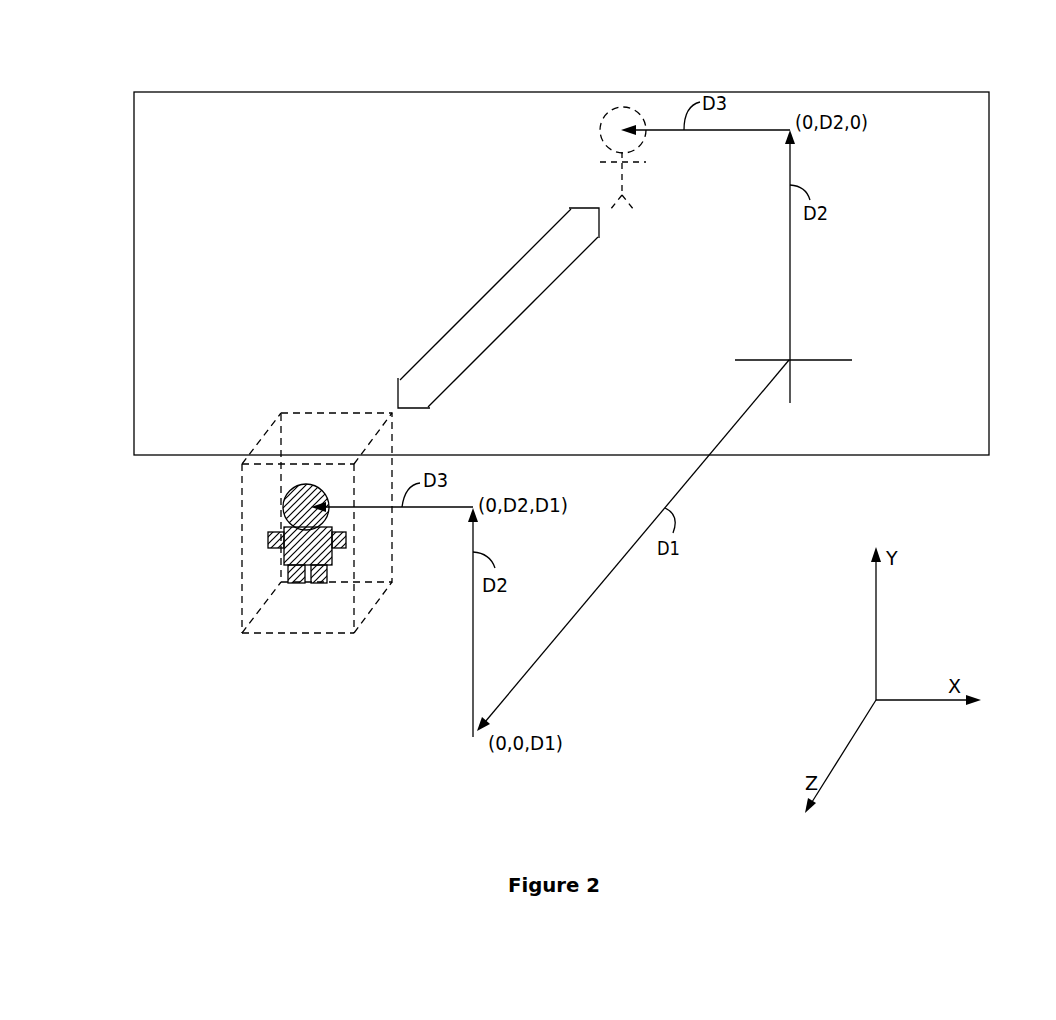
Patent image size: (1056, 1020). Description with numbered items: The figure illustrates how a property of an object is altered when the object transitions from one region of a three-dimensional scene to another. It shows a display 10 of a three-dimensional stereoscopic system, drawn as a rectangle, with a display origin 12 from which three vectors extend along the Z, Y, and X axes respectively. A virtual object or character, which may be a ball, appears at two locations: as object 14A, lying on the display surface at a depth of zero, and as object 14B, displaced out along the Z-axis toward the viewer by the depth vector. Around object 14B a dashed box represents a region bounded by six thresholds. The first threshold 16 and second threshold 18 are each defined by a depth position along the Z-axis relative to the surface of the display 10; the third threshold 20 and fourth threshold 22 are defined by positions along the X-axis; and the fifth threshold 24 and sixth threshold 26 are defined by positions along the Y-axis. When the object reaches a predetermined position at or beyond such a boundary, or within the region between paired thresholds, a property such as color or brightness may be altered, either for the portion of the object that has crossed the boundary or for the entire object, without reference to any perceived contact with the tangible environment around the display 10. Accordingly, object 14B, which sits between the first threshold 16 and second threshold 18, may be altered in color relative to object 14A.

The display 10 is at (874, 92).
The display origin 12 is at (790, 358).
The object 14A is at (561, 155).
The object 14B is at (300, 505).
The first threshold 16 is at (335, 413).
The second threshold 18 is at (267, 462).
The third threshold 20 is at (350, 602).
The fourth threshold 22 is at (242, 598).
The fifth threshold 24 is at (378, 600).
The sixth threshold 26 is at (370, 441).